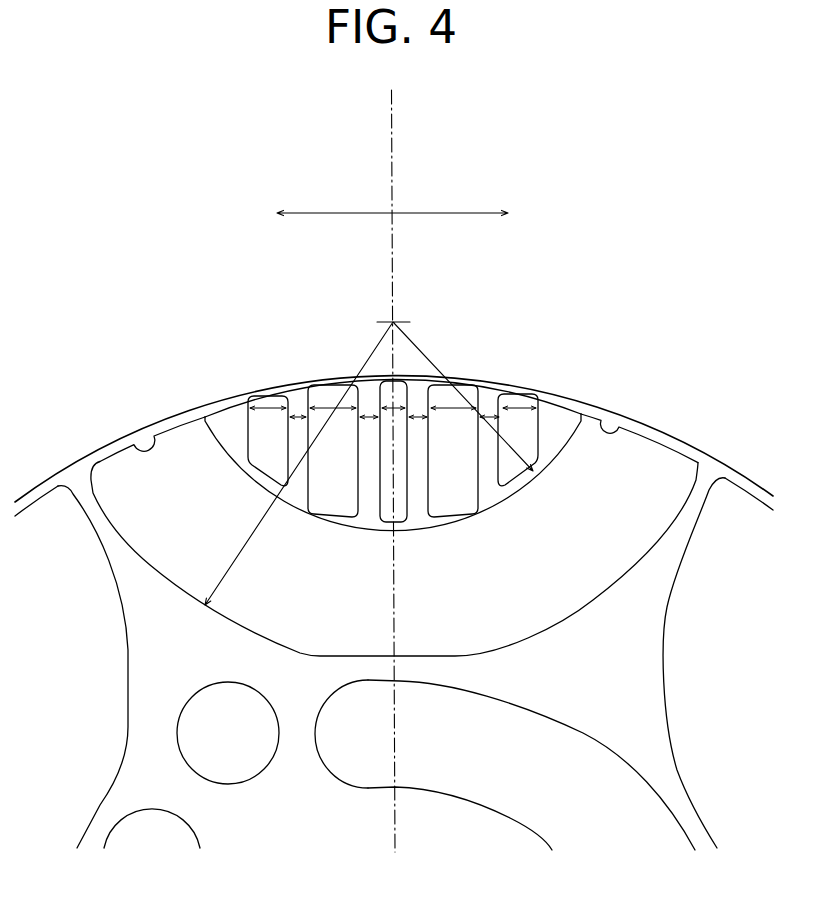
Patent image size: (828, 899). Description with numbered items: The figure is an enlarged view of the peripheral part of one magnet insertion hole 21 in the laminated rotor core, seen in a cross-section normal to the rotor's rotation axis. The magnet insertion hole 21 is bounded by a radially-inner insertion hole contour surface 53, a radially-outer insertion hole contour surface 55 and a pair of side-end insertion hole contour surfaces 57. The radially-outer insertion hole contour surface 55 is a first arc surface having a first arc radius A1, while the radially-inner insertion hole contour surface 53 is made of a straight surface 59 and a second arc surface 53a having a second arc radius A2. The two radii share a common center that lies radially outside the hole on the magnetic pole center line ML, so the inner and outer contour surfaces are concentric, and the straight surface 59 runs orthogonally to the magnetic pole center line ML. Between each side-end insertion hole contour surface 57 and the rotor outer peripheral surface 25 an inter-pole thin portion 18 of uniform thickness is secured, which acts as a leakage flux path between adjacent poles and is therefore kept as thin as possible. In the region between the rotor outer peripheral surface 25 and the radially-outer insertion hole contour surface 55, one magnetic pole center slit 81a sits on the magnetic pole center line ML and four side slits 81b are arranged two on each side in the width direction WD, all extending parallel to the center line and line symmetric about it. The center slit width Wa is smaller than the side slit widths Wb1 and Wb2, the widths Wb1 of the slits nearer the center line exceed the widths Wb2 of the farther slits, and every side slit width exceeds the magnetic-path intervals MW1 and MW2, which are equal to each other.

The inter-pole thin portion 18 is at (37, 495).
The magnet insertion hole 21 is at (663, 477).
The rotor outer peripheral surface 25 is at (206, 418).
The radially-inner insertion hole contour surface 53 is at (100, 460).
The second arc surface 53a is at (668, 458).
The radially-outer insertion hole contour surface 55 is at (230, 447).
The side-end insertion hole contour surface 57 is at (129, 528).
The straight surface 59 is at (648, 550).
The magnetic pole center slit 81a is at (397, 405).
The side slit 81b is at (270, 398).
The magnetic pole center line ML is at (392, 138).
The width direction WD is at (452, 212).
The interval between adjacent magnetic pole center slit and side slit MW1 is at (362, 416).
The interval between adjacent side slits MW2 is at (297, 415).
The width of magnetic pole center slit Wa is at (385, 405).
The width of side slit closer to magnetic pole center line Wb1 is at (300, 410).
The width of side slit farther from magnetic pole center line Wb2 is at (245, 415).
The first arc radius A1 is at (415, 402).
The second arc radius A2 is at (240, 553).